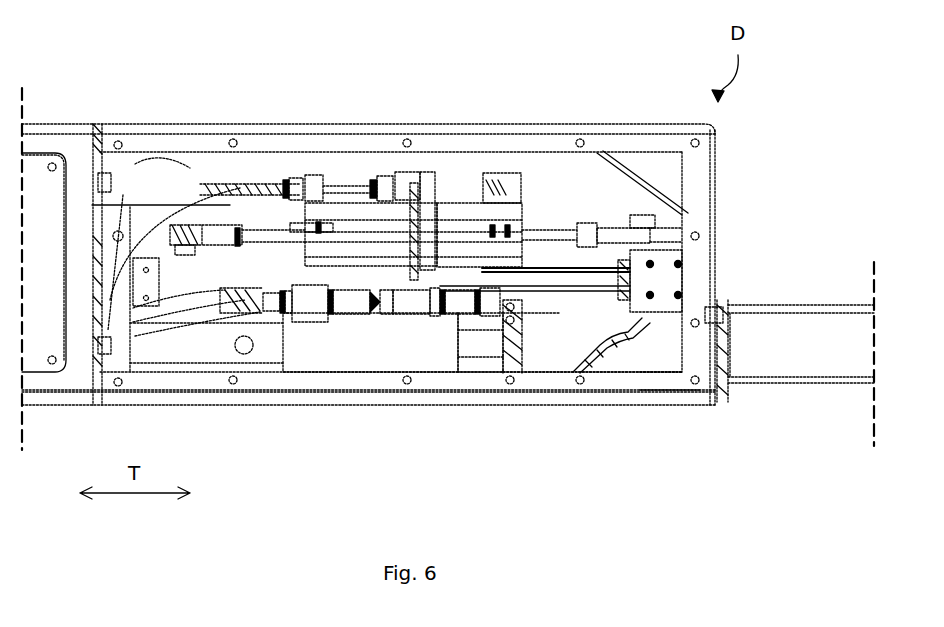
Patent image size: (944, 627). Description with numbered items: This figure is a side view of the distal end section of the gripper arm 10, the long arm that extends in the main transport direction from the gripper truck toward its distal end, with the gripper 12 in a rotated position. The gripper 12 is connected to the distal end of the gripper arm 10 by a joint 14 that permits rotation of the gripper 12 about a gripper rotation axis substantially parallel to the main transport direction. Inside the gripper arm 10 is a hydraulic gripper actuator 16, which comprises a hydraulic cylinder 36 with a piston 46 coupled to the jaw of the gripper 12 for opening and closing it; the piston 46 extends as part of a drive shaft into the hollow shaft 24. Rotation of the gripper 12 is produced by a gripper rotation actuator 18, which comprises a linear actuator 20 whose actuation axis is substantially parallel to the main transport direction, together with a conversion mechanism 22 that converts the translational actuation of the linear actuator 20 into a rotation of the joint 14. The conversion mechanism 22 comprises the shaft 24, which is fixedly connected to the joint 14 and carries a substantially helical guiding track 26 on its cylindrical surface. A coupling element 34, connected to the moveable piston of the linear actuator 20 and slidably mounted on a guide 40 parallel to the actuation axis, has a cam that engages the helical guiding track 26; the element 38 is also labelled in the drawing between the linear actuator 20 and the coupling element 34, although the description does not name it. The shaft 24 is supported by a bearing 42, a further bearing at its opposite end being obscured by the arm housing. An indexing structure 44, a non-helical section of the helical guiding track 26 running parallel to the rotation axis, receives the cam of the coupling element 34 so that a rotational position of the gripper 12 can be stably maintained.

The gripper arm 10 is at (303, 383).
The gripper 12 is at (815, 268).
The joint 14 is at (680, 350).
The hydraulic gripper actuator 16 is at (338, 418).
The gripper rotation actuator 18 is at (438, 132).
The linear actuator 20 is at (508, 128).
The conversion mechanism 22 is at (644, 207).
The shaft 24 is at (545, 360).
The helical guiding track 26 is at (632, 392).
The coupling element 34 is at (665, 273).
The hydraulic cylinder 36 is at (353, 358).
The piston rod fitting 38 is at (607, 235).
The guide 40 is at (548, 280).
The bearing 42 is at (510, 357).
The indexing structure 44 is at (617, 343).
The piston 46 is at (477, 347).